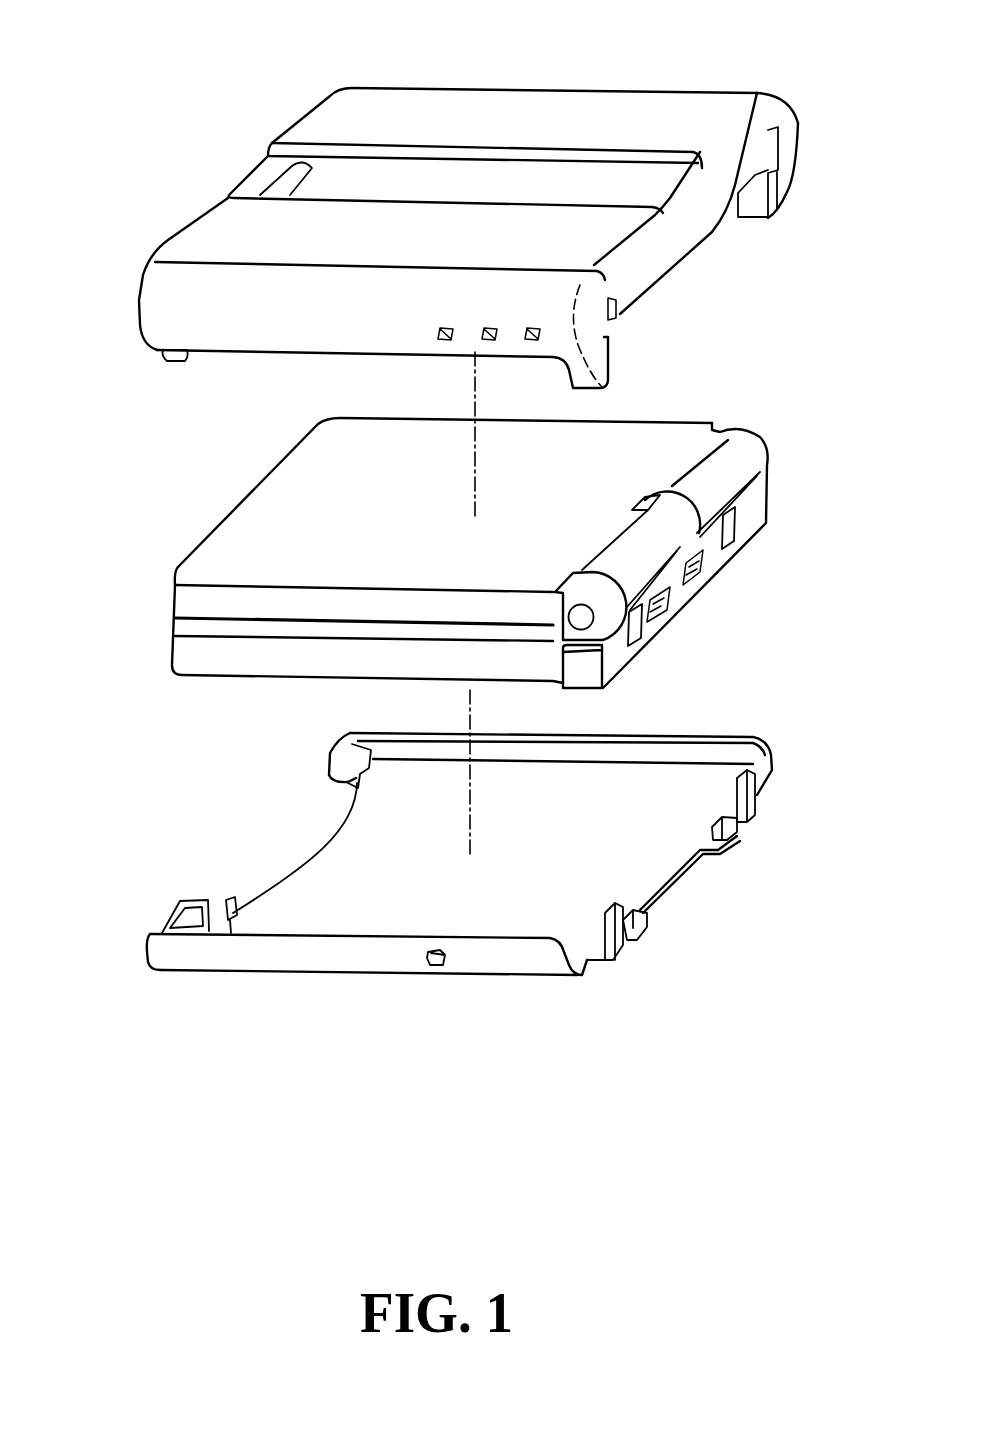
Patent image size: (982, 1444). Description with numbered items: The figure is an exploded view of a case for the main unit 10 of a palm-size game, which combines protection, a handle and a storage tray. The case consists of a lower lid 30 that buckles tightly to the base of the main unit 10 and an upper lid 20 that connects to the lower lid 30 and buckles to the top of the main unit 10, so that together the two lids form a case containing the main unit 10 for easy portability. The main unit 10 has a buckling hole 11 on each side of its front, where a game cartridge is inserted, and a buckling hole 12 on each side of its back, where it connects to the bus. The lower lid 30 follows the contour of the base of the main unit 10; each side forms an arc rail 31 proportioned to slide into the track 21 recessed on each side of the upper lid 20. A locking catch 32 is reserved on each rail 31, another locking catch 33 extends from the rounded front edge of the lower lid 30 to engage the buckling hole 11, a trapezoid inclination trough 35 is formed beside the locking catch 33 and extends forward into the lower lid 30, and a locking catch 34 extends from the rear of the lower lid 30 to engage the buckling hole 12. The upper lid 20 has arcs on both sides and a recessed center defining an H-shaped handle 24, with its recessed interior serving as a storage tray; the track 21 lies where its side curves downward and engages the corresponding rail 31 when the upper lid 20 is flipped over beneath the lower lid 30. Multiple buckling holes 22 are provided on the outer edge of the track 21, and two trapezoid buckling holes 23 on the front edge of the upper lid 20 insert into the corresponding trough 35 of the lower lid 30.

The main unit 10 is at (672, 418).
The buckling hole 11 is at (425, 515).
The buckling hole 12 is at (637, 627).
The upper lid 20 is at (532, 97).
The track 21 is at (775, 147).
The buckling holes 22 is at (437, 336).
The buckling holes 23 is at (172, 361).
The H-shaped handle 24 is at (490, 209).
The lower lid 30 is at (466, 889).
The arc rail 31 is at (332, 968).
The locking catch 32 is at (433, 965).
The locking catch 33 is at (230, 900).
The locking catch 34 is at (737, 836).
The trapezoid inclination trough 35 is at (180, 925).